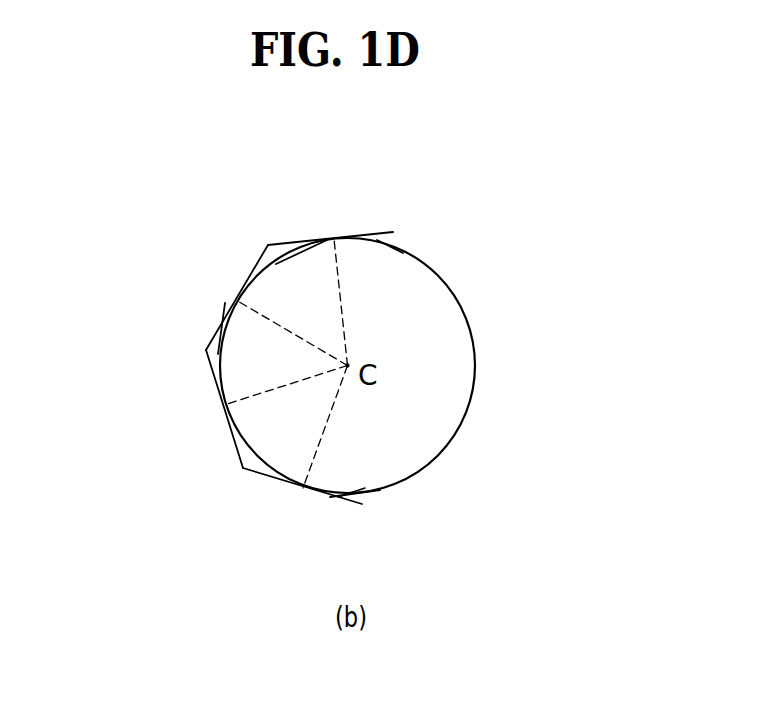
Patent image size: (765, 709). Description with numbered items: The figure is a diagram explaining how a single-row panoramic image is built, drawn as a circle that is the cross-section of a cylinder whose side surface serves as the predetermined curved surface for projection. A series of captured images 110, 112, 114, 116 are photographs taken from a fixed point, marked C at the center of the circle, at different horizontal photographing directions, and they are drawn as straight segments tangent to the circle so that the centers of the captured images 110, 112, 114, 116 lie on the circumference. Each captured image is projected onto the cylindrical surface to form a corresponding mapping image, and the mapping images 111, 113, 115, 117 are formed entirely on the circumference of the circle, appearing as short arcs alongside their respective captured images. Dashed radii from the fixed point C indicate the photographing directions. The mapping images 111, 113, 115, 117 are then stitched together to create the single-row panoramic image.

The captured image 110 is at (333, 499).
The mapping image 111 is at (358, 495).
The captured image 112 is at (208, 365).
The mapping image 113 is at (206, 350).
The captured image 114 is at (220, 326).
The mapping image 115 is at (281, 247).
The captured image 116 is at (363, 236).
The mapping image 117 is at (398, 252).